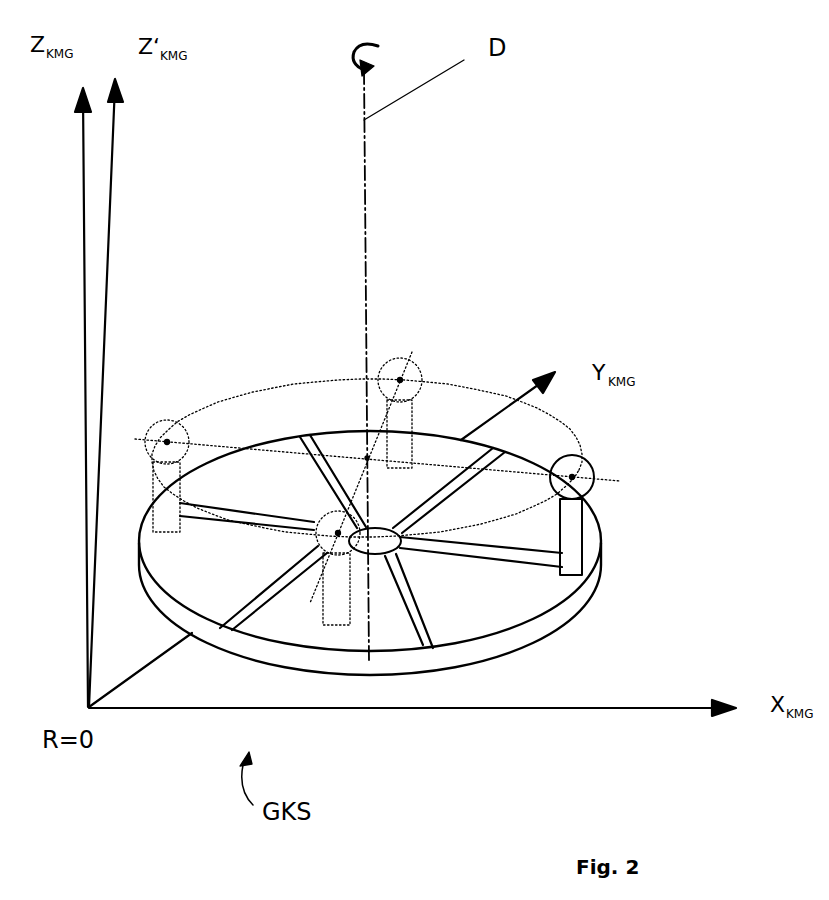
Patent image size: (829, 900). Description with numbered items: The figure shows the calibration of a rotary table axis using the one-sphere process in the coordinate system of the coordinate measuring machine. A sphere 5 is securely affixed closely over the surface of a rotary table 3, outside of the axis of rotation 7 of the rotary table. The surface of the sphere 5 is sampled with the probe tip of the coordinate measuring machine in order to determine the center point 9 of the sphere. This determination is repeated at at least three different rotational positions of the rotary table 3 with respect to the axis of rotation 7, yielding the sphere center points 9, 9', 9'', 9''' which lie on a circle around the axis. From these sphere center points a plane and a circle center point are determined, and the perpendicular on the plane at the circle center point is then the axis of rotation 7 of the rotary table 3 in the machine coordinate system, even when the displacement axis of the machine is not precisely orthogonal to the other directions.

The rotary table 3 is at (597, 599).
The sphere 5 is at (595, 470).
The axis of rotation 7 is at (370, 202).
The center point 9 is at (602, 488).
The sphere center point 9' is at (423, 399).
The sphere center point 9'' is at (176, 444).
The sphere center point 9''' is at (303, 568).